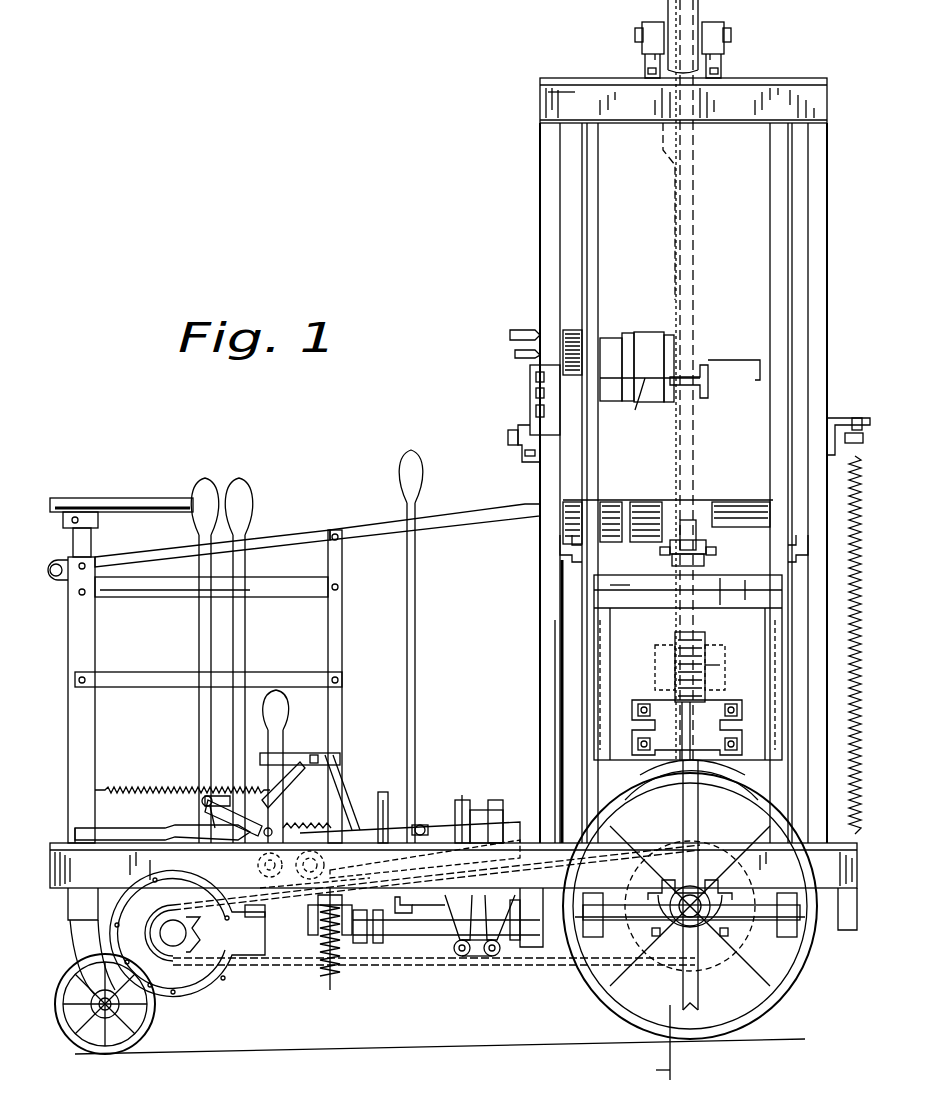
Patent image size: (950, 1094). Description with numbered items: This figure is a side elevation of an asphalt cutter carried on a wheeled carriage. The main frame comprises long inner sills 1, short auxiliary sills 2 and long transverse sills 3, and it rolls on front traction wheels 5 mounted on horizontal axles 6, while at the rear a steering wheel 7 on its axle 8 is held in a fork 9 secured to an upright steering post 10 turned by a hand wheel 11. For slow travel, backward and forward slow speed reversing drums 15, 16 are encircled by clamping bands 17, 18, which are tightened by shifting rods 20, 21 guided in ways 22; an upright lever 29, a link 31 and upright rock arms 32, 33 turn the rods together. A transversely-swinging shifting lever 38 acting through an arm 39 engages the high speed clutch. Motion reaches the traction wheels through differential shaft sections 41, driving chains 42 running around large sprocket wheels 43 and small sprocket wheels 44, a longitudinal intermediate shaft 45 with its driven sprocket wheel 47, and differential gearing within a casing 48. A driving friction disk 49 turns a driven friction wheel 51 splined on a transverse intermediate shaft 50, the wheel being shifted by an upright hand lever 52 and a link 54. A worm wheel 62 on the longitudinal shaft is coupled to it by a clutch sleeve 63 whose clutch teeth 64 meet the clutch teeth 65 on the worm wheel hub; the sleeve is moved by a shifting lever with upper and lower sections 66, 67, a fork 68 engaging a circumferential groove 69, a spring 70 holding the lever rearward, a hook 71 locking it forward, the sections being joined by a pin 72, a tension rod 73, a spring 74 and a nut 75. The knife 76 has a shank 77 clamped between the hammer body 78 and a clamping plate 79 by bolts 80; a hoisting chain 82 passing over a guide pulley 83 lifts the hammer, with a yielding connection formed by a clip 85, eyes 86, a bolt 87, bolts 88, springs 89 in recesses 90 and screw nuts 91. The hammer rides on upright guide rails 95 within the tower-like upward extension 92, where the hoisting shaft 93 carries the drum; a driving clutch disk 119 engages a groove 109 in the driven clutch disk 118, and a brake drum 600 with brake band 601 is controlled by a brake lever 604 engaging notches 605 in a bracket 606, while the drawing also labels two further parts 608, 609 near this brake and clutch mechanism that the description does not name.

The long inner sill 1 is at (453, 858).
The short auxiliary sill 2 is at (806, 869).
The long transverse sill 3 is at (688, 927).
The front traction wheel 5 is at (790, 975).
The horizontal axle 6 is at (691, 540).
The steering wheel 7 is at (110, 1052).
The horizontal axle 8 is at (89, 1004).
The fork 9 is at (91, 941).
The upright steering post 10 is at (91, 540).
The hand wheel 11 is at (140, 488).
The backward slow speed motion reversing drum 15 is at (455, 800).
The forward slow speed motion reversing drum 16 is at (503, 810).
The clamping band 17 is at (462, 795).
The clamping band 18 is at (495, 800).
The shifting rod 20 is at (455, 955).
The shifting rod 21 is at (495, 955).
The ways 22 is at (470, 958).
The upright lever 29 is at (199, 648).
The link 31 is at (372, 825).
The upright rock arm 32 is at (446, 939).
The upright rock arm 33 is at (515, 960).
The shifting lever 38 is at (415, 675).
The arm 39 is at (429, 817).
The differential shaft section 41 is at (160, 933).
The driving chain 42 is at (355, 940).
The large sprocket wheel 43 is at (677, 906).
The small sprocket wheel 44 is at (178, 942).
The longitudinal intermediate shaft 45 is at (440, 920).
The driven sprocket wheel 47 is at (540, 965).
The casing 48 is at (243, 950).
The driving friction disk 49 is at (388, 795).
The transverse intermediate shaft 50 is at (425, 859).
The driven friction wheel 51 is at (383, 805).
The upright hand lever 52 is at (245, 640).
The link 54 is at (140, 828).
The worm wheel 62 is at (318, 955).
The clutch sleeve 63 is at (345, 950).
The clutch teeth 64 is at (345, 940).
The clutch teeth 65 is at (318, 945).
The upper section of shifting lever 66 is at (283, 705).
The lower section of shifting lever 67 is at (298, 862).
The fork 68 is at (322, 878).
The circumferential groove 69 is at (378, 945).
The spring 70 is at (160, 790).
The hook 71 is at (314, 755).
The pin 72 is at (258, 868).
The tension rod 73 is at (275, 825).
The spring 74 is at (300, 828).
The nut 75 is at (348, 790).
The knife 76 is at (730, 760).
The shank 77 is at (725, 680).
The hammer body 78 is at (688, 667).
The clamping plate 79 is at (701, 742).
The bolts 80 is at (742, 712).
The hoisting chain 82 is at (698, 243).
The guide pulley 83 is at (703, 8).
The clip 85 is at (716, 552).
The eyes 86 is at (696, 540).
The bolt 87 is at (660, 555).
The bolts 88 is at (705, 640).
The springs 89 is at (655, 660).
The recesses 90 is at (727, 664).
The screw nuts 91 is at (660, 688).
The upward extension 92 is at (540, 228).
The hoisting shaft 93 is at (509, 443).
The upright guide rail 95 is at (598, 222).
The groove 109 is at (849, 626).
The driven clutch disk 118 is at (700, 355).
The driving clutch disk 119 is at (608, 338).
The brake drum 600 is at (674, 338).
The brake band 601 is at (650, 325).
The brake lever 604 is at (536, 380).
The notches 605 is at (536, 395).
The bracket 606 is at (536, 412).
The shifter rod 608 is at (651, 405).
The shifter lever 609 is at (507, 341).